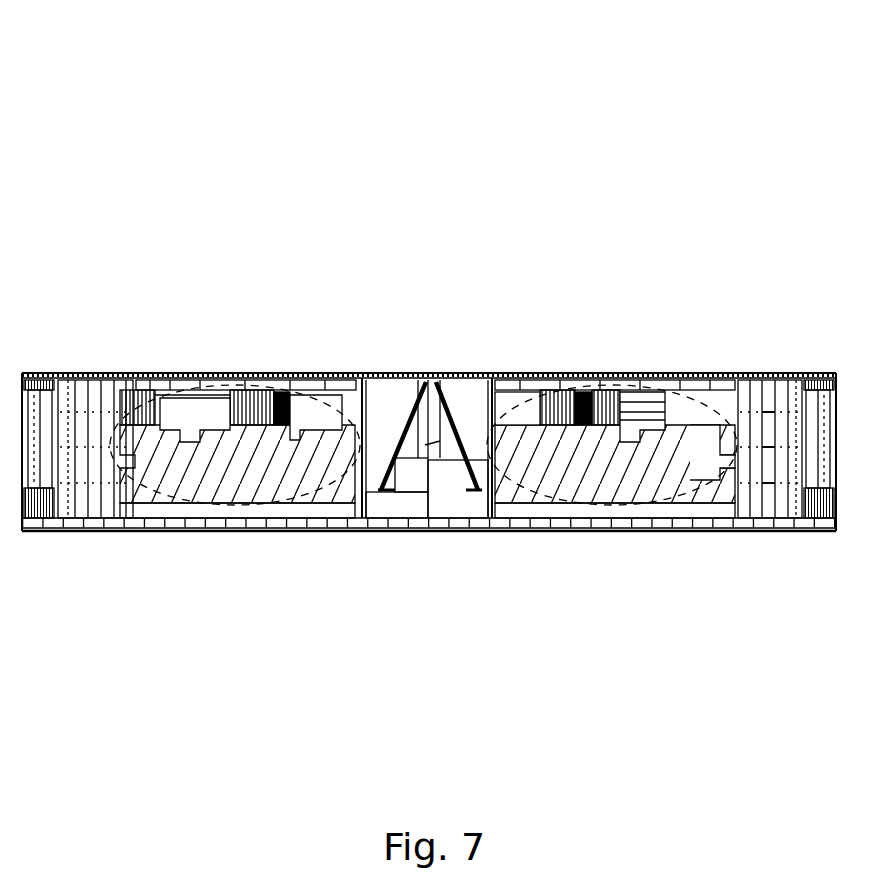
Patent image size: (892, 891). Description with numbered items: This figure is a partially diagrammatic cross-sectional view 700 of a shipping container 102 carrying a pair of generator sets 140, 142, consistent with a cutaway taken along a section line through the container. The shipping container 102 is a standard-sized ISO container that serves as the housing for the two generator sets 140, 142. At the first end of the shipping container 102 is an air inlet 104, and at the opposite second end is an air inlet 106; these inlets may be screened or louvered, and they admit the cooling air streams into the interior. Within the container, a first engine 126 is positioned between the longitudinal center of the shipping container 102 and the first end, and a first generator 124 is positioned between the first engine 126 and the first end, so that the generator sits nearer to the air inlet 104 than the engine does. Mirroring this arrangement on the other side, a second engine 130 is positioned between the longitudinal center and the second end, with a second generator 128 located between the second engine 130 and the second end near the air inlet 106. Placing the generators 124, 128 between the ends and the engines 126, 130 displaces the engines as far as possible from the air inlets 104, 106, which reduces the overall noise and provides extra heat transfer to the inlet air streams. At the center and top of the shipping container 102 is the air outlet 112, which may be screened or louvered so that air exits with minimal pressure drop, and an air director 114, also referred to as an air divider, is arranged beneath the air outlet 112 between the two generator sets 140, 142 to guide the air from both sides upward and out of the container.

The electronic device assembly 700 is at (160, 68).
The shipping container 102 is at (664, 372).
The air inlet 104 is at (831, 378).
The air inlet 106 is at (25, 498).
The air outlet 112 is at (465, 348).
The air director 114 is at (446, 415).
The first generator 124 is at (697, 488).
The first engine 126 is at (545, 488).
The second generator 128 is at (155, 498).
The second engine 130 is at (307, 483).
The generator set 140 is at (628, 538).
The generator set 142 is at (258, 538).